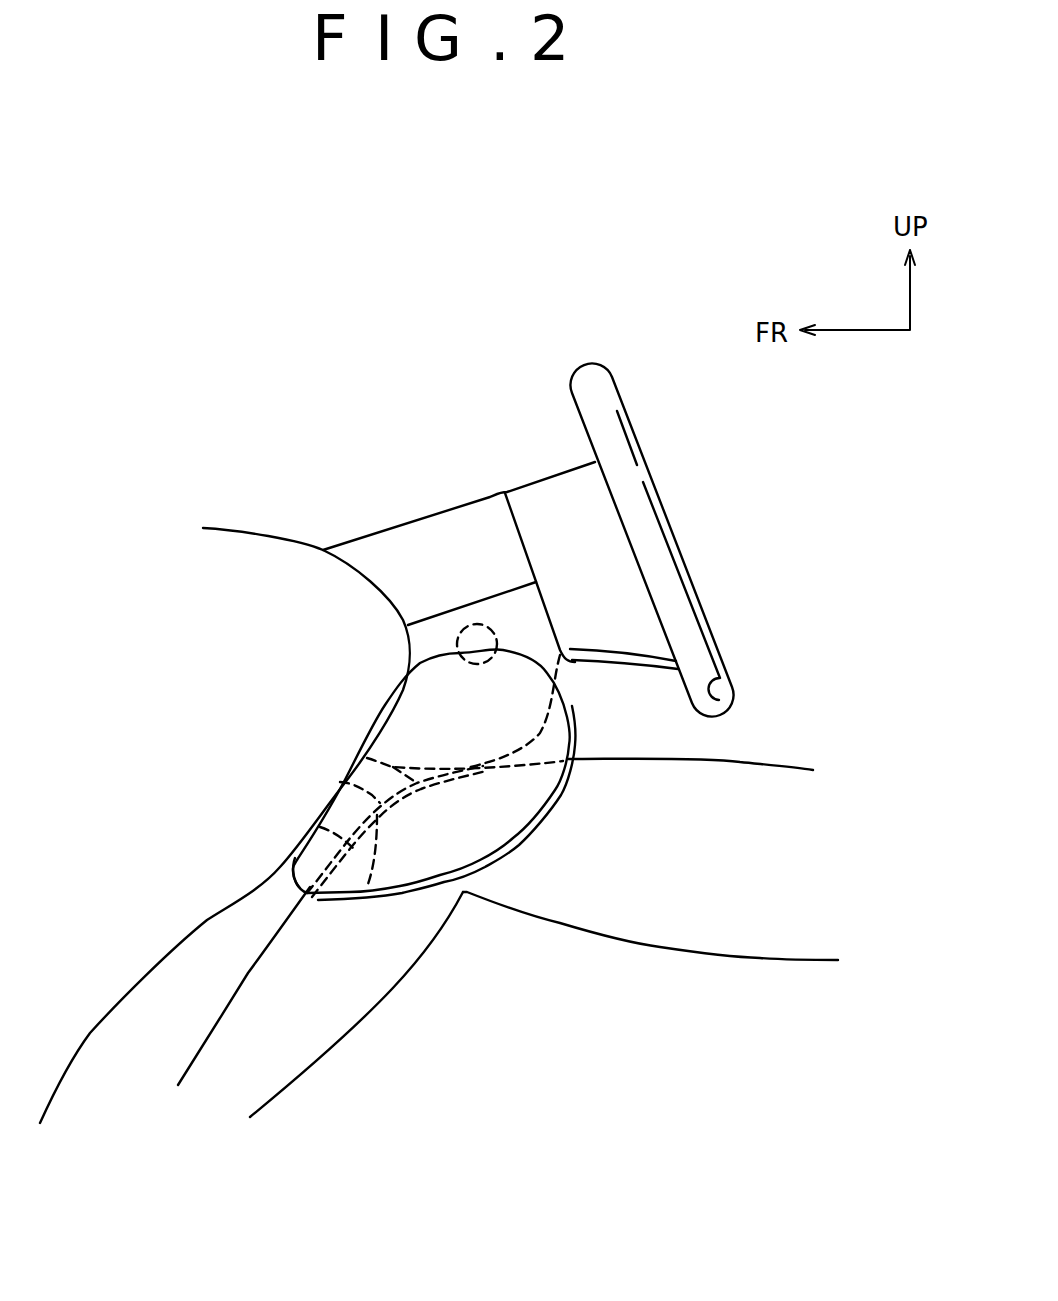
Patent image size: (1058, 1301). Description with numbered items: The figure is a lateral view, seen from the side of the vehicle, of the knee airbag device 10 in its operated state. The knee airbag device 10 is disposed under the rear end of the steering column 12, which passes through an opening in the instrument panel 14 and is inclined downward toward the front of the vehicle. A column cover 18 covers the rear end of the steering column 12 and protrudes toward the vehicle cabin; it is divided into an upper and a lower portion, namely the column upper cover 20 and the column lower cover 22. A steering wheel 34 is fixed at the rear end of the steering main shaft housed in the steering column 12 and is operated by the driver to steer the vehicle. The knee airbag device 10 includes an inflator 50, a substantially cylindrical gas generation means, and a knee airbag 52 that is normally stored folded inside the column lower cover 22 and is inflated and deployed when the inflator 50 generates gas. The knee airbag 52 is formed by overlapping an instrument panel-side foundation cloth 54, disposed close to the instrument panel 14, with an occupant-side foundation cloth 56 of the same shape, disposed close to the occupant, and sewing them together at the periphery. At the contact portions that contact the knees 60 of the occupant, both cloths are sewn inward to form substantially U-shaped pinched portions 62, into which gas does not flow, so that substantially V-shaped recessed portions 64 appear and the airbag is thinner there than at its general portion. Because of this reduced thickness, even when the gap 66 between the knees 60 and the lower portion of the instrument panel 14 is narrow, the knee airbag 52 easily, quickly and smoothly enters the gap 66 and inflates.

The knee airbag device 10 is at (598, 686).
The steering column 12 is at (407, 543).
The instrument panel 14 is at (210, 922).
The column cover 18 is at (407, 576).
The column upper cover 20 is at (395, 578).
The column lower cover 22 is at (417, 653).
The steering wheel 34 is at (663, 512).
The inflator 50 is at (492, 627).
The knee airbag 52 is at (572, 741).
The instrument panel-side foundation cloth 54 is at (292, 877).
The occupant-side foundation cloth 56 is at (547, 812).
The knees 60 is at (367, 758).
The pinched portions 62 is at (320, 827).
The recessed portions 64 is at (367, 890).
The gap 66 is at (340, 782).